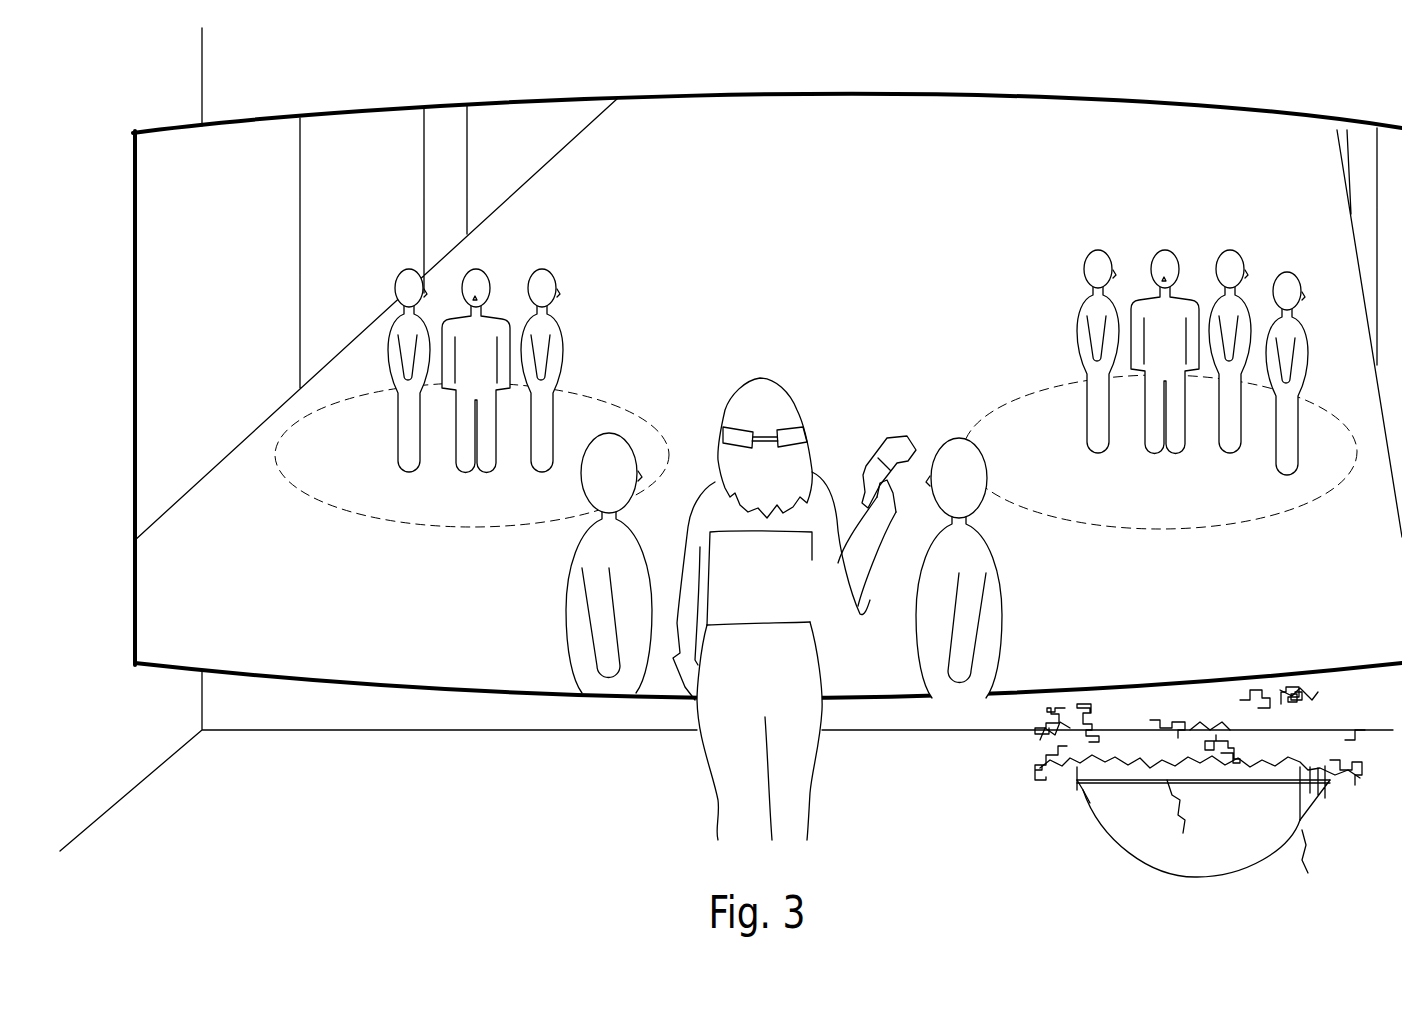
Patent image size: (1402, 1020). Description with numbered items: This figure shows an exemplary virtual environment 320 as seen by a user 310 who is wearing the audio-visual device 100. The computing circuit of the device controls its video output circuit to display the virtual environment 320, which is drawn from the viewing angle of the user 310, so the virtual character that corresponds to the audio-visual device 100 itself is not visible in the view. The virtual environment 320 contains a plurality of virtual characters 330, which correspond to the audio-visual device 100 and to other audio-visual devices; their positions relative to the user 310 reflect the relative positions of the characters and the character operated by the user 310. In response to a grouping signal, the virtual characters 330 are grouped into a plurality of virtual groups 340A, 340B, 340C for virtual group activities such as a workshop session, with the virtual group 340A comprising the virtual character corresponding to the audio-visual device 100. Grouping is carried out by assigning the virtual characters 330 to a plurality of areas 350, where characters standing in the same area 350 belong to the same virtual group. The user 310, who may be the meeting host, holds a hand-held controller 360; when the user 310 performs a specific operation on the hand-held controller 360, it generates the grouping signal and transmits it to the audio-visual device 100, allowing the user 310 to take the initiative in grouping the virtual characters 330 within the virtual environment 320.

The audio-visual device 100 is at (806, 433).
The user 310 is at (725, 742).
The virtual environment 320 is at (361, 108).
The virtual characters 330 is at (1163, 259).
The virtual group 340A is at (942, 398).
The virtual group 340B is at (584, 246).
The virtual group 340C is at (1096, 205).
The area 350 is at (432, 532).
The hand-held controller 360 is at (897, 435).